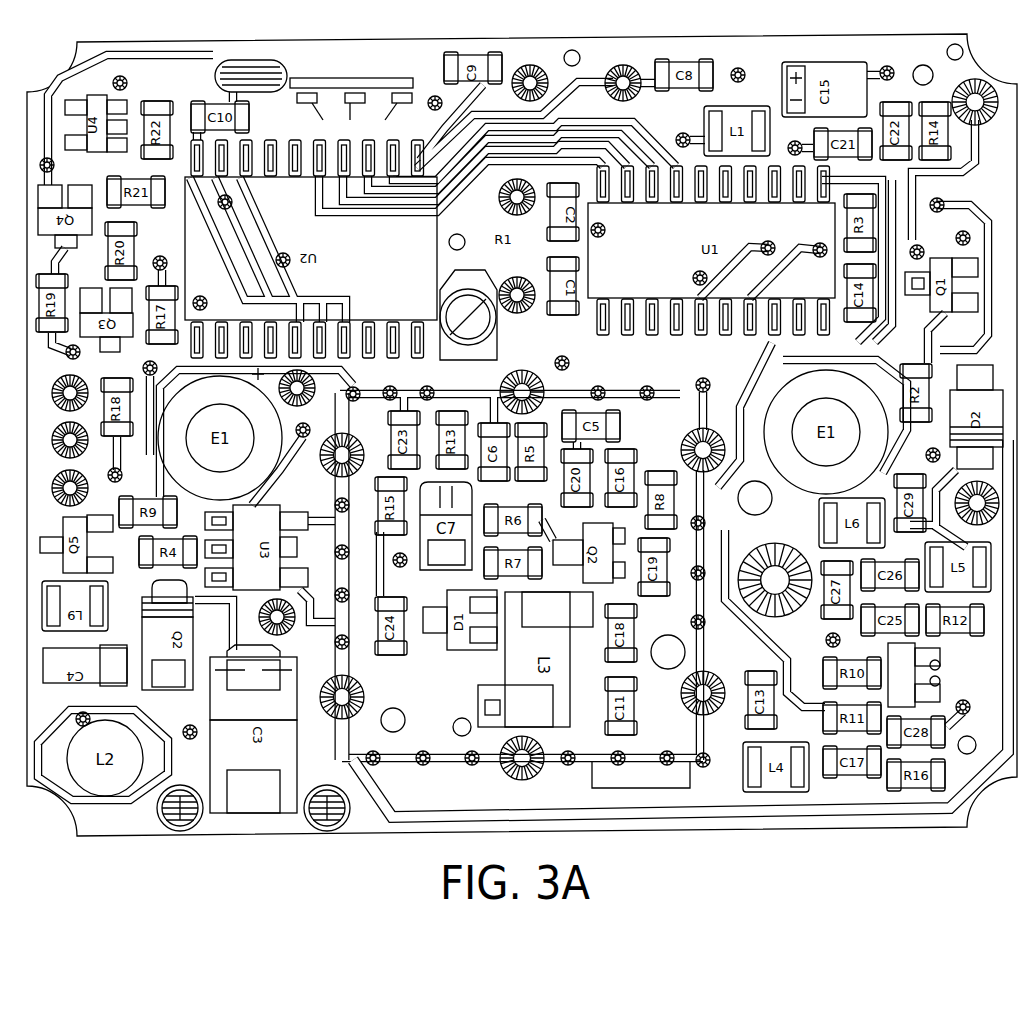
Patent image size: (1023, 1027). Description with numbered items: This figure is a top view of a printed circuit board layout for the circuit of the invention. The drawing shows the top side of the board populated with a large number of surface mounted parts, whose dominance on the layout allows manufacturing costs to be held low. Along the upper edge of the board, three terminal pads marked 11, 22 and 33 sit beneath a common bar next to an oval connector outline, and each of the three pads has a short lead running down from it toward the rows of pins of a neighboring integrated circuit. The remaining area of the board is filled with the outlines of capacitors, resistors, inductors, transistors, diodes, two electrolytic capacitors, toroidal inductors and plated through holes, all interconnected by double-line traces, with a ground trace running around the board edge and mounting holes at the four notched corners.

The connector terminal pad 11 is at (398, 88).
The connector terminal pad 22 is at (347, 88).
The connector terminal pad 33 is at (310, 88).